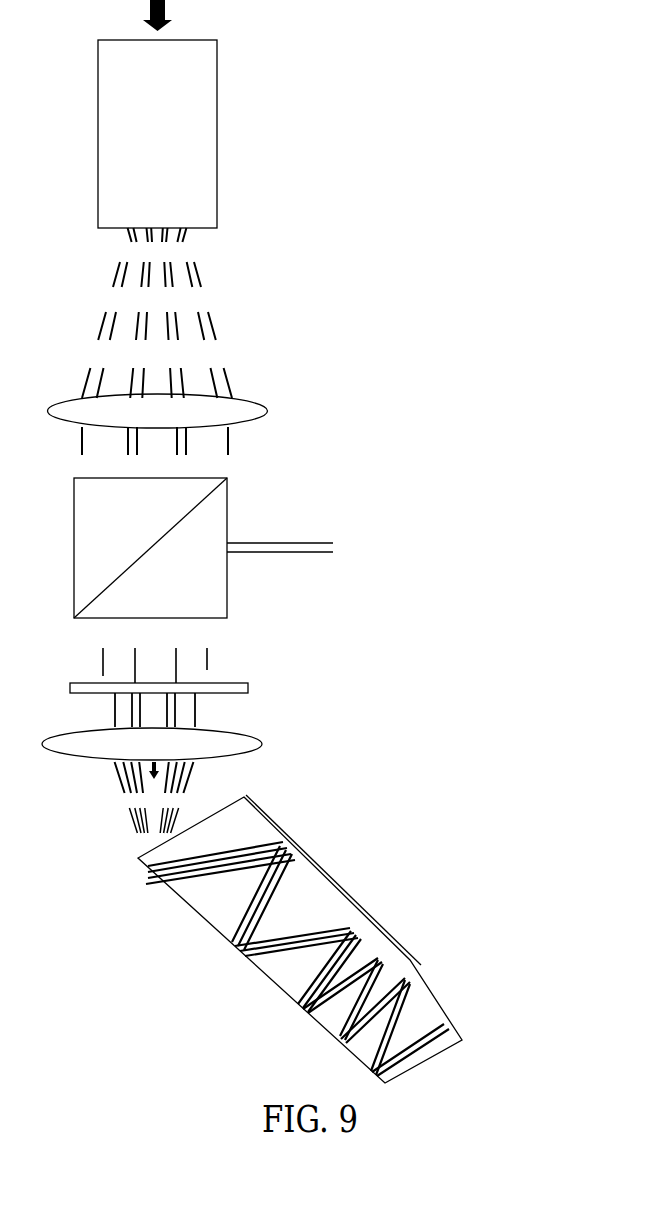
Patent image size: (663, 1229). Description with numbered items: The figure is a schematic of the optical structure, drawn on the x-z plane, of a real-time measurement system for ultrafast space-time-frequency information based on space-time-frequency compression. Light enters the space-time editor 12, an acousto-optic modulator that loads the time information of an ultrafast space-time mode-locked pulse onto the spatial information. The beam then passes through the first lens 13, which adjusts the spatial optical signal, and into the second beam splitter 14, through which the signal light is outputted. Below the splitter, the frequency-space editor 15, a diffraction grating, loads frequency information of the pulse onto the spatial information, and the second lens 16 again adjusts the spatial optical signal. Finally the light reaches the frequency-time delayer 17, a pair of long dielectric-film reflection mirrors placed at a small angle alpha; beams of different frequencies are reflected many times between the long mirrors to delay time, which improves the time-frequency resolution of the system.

The space-time editor 12 is at (217, 130).
The first lens 13 is at (260, 415).
The second beam splitter 14 is at (227, 513).
The frequency-space editor 15 is at (248, 690).
The second lens 16 is at (263, 740).
The frequency-time delayer 17 is at (437, 1013).